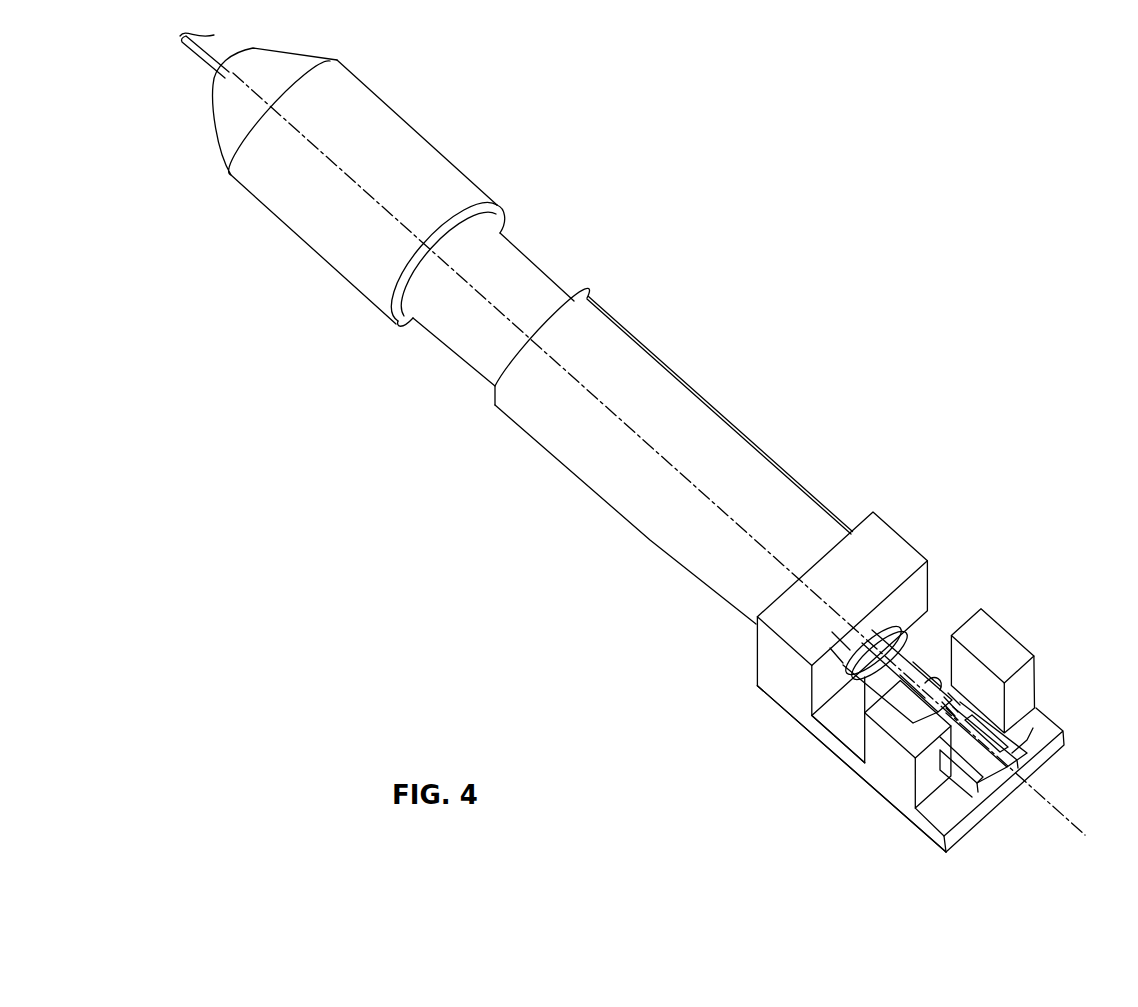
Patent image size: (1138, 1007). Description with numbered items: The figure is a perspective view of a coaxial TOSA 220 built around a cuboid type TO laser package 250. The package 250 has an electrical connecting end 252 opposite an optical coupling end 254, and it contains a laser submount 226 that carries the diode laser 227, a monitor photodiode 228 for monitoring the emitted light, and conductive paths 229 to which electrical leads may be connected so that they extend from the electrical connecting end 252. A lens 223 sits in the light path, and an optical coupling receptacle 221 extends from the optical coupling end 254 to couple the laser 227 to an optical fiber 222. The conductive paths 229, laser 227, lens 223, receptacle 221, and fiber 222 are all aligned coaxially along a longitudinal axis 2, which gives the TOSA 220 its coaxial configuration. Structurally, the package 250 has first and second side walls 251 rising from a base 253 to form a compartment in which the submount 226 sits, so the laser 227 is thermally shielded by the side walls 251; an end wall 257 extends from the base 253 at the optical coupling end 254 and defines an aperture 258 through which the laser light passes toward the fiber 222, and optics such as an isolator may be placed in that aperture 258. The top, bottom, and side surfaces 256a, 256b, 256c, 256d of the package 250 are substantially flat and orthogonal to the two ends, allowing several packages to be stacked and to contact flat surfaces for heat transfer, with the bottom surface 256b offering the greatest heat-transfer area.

The longitudinal axis 2 is at (673, 470).
The coaxial TOSA 220 is at (621, 434).
The optical coupling receptacle 221 is at (685, 391).
The optical fiber 222 is at (212, 57).
The lens 223 is at (919, 652).
The laser submount 226 is at (978, 791).
The diode laser 227 is at (957, 712).
The monitor photodiode 228 is at (987, 750).
The conductive paths 229 is at (1012, 747).
The cuboid type TO laser package 250 is at (892, 641).
The side walls 251 is at (945, 697).
The electrical connecting end 252 is at (994, 851).
The base 253 is at (838, 750).
The optical coupling end 254 is at (796, 539).
The top surface 256a is at (864, 540).
The bottom surface 256b is at (904, 852).
The side surface 256c is at (891, 784).
The side surface 256d is at (1040, 633).
The end wall 257 is at (758, 657).
The aperture 258 is at (868, 628).